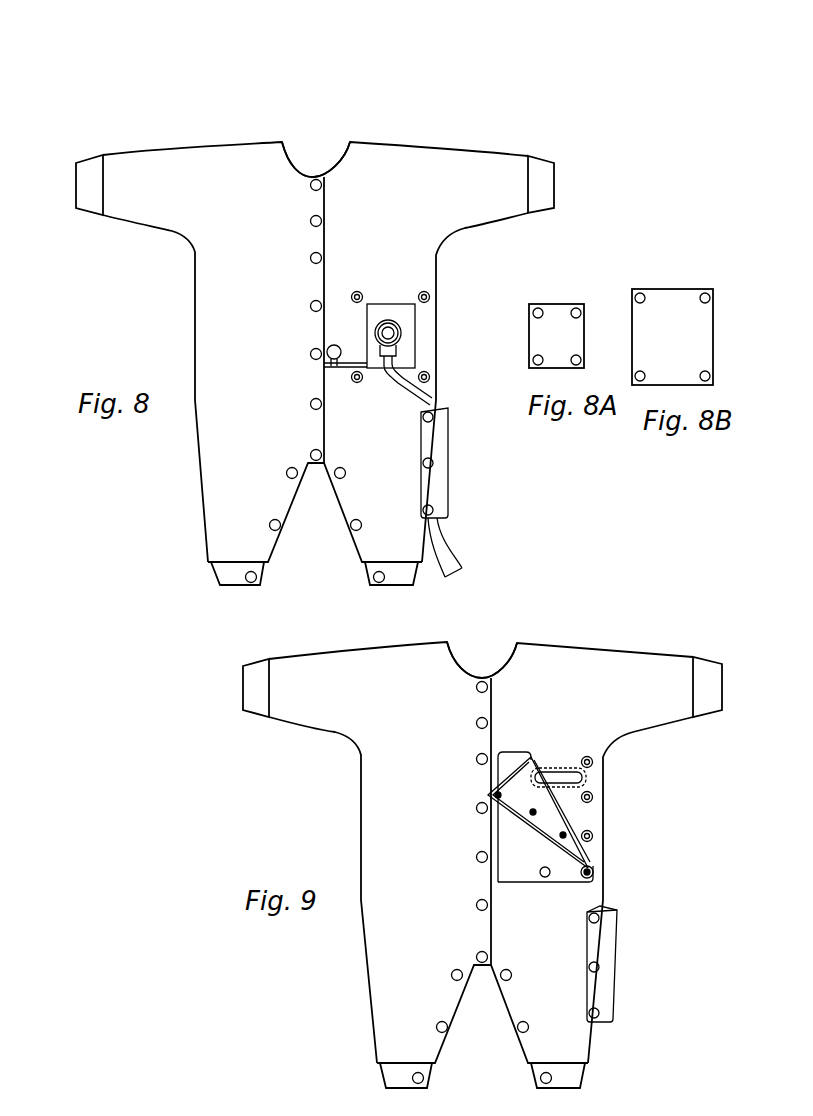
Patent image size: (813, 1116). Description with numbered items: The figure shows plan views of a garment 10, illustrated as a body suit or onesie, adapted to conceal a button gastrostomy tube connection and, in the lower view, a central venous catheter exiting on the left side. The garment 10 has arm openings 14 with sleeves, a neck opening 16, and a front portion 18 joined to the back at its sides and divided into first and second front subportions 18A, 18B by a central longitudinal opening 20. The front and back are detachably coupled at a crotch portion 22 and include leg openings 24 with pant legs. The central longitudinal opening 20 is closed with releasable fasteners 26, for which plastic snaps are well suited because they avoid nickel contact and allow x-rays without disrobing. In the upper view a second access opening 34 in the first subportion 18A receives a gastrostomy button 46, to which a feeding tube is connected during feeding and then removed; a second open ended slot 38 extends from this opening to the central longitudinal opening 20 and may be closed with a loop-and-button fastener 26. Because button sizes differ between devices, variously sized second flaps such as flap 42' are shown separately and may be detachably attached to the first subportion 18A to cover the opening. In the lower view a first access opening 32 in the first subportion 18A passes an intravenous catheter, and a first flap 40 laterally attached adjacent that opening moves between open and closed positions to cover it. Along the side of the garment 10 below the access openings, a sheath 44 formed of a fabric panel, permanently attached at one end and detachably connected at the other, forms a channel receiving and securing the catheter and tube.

In FIG. 8, the garment 10 is at (525, 104).
In FIG. 9, the garment 10 is at (693, 608).
In FIG. 8, the arm openings 14 is at (76, 178).
In FIG. 9, the arm openings 14 is at (243, 688).
In FIG. 8, the neck opening 16 is at (290, 157).
In FIG. 9, the neck opening 16 is at (466, 660).
In FIG. 8, the front portion 18 is at (195, 295).
In FIG. 9, the front portion 18 is at (361, 795).
In FIG. 8, the first front subportion 18A is at (371, 210).
In FIG. 9, the first front subportion 18A is at (530, 680).
In FIG. 8, the second front subportion 18B is at (233, 278).
In FIG. 9, the second front subportion 18B is at (383, 703).
In FIG. 8, the central longitudinal opening 20 is at (324, 282).
In FIG. 9, the central longitudinal opening 20 is at (490, 880).
In FIG. 8, the crotch portion 22 is at (317, 466).
In FIG. 9, the crotch portion 22 is at (484, 968).
In FIG. 8, the leg openings 24 is at (246, 588).
In FIG. 9, the leg openings 24 is at (407, 1090).
In FIG. 8, the releasable fasteners 26 is at (339, 343).
In FIG. 9, the releasable fasteners 26 is at (479, 857).
In FIG. 9, the first access opening 32 is at (553, 777).
In FIG. 8, the second access opening 34 is at (382, 305).
In FIG. 8, the second open ended slot 38 is at (324, 367).
In FIG. 9, the first flap 40 is at (512, 752).
In FIG. 8A, the second flap 42' is at (574, 316).
In FIG. 8, the sheath 44 is at (453, 455).
In FIG. 9, the sheath 44 is at (618, 953).
In FIG. 8, the gastrostomy button 46 is at (392, 335).